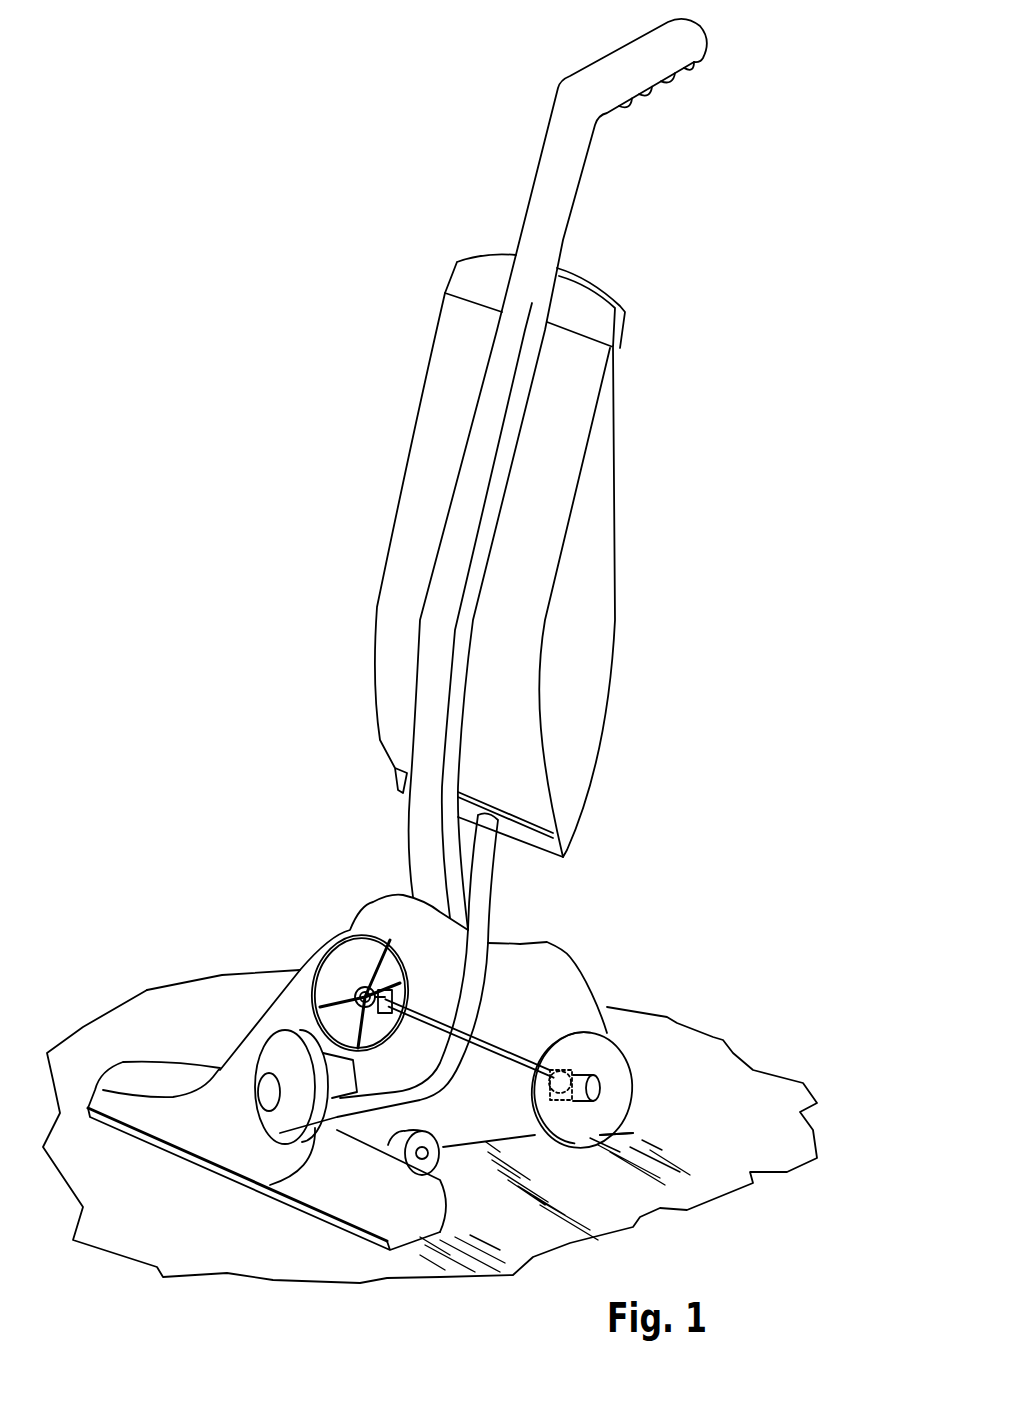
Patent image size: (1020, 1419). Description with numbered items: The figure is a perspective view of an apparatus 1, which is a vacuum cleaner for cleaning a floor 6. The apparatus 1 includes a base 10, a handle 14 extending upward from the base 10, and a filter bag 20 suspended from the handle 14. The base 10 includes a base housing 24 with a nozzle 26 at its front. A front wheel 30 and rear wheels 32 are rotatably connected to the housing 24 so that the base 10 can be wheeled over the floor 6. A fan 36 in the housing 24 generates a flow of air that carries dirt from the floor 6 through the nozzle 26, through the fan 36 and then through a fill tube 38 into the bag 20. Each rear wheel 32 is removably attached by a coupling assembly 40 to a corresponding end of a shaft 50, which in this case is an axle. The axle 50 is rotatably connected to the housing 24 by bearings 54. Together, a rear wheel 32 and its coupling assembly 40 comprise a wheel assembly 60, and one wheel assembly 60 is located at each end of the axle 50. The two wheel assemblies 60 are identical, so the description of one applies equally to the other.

The apparatus 1 is at (821, 62).
The floor 6 is at (753, 1087).
The base 10 is at (265, 972).
The handle 14 is at (442, 552).
The filter bag 20 is at (377, 607).
The base housing 24 is at (310, 980).
The nozzle 26 is at (157, 1067).
The front wheel 30 is at (415, 1170).
The rear wheel 32 is at (372, 975).
The fan 36 is at (270, 1185).
The fill tube 38 is at (490, 913).
The coupling assembly 40 is at (374, 955).
The shaft 50 is at (508, 1028).
The bearings 54 is at (398, 1006).
The wheel assembly 60 is at (333, 930).